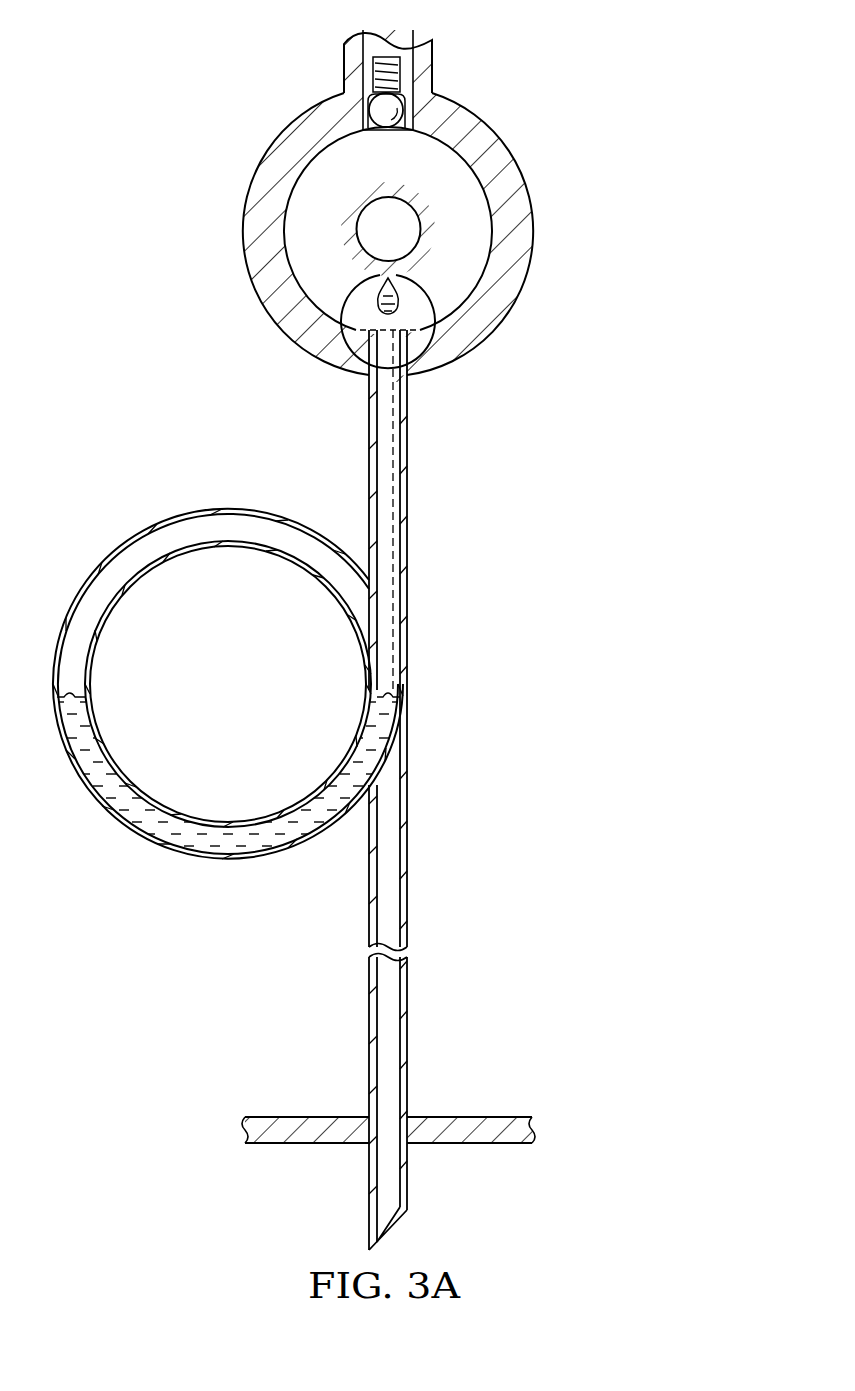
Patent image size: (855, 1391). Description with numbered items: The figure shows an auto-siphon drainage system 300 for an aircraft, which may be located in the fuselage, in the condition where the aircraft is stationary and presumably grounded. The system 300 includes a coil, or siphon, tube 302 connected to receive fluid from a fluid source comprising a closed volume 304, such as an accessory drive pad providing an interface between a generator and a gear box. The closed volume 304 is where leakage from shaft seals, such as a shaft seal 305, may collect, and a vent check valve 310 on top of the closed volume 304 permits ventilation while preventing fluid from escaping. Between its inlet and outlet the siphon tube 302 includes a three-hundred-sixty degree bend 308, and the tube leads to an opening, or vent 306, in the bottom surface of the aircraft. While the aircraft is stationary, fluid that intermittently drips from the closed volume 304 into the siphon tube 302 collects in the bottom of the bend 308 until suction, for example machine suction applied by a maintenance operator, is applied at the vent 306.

The auto-siphon drainage system 300 is at (70, 72).
The siphon tube 302 is at (369, 448).
The closed volume 304 is at (243, 222).
The shaft seal 305 is at (446, 239).
The vent 306 is at (394, 1133).
The 360 degree bend 308 is at (178, 858).
The vent check valve 310 is at (374, 141).